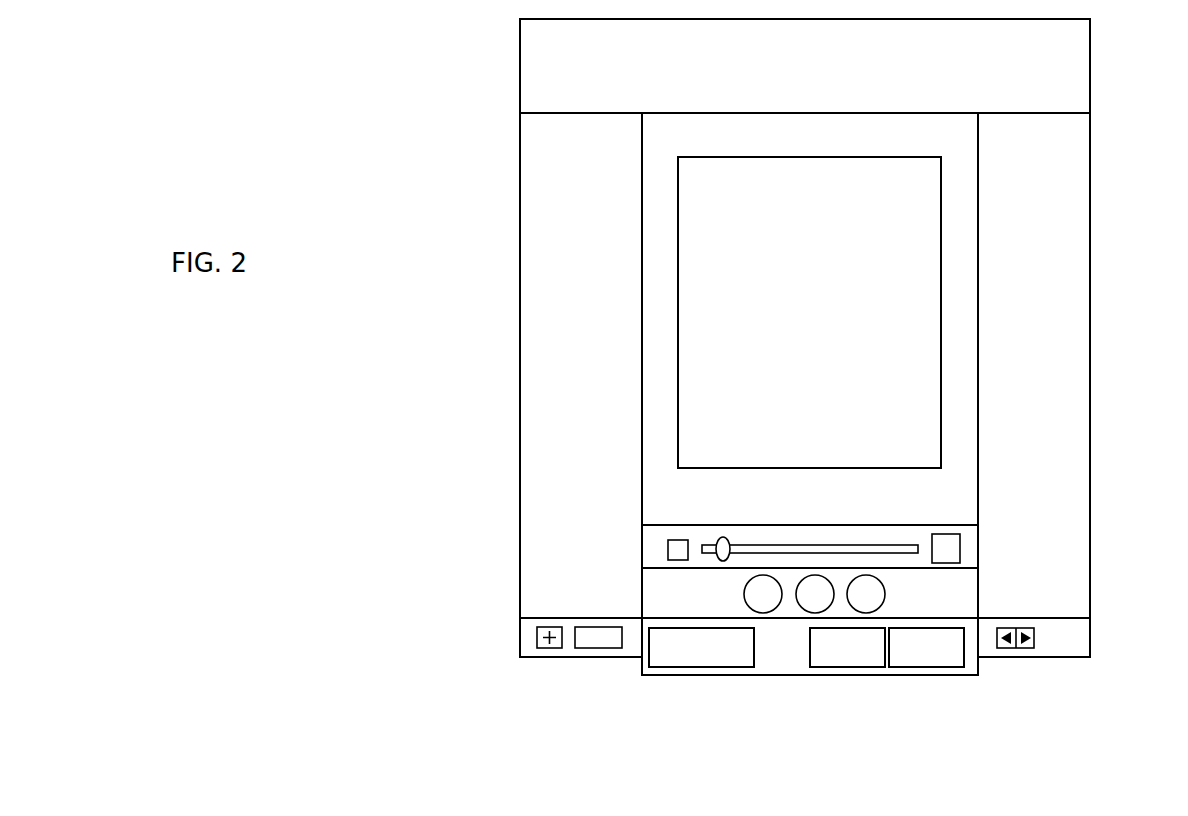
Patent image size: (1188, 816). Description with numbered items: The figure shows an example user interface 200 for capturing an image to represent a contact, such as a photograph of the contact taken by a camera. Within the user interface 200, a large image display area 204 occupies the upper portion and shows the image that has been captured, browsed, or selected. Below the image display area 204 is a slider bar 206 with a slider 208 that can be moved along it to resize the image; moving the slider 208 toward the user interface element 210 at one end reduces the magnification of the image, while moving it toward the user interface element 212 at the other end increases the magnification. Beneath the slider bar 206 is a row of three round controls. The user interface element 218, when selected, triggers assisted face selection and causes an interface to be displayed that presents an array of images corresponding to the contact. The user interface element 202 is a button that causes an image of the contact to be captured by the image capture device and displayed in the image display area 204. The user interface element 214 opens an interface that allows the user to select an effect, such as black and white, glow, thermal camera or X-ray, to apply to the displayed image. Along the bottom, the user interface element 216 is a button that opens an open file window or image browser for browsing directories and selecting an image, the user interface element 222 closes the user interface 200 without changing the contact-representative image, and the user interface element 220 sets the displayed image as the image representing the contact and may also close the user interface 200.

The user interface 200 is at (641, 277).
The image display area 204 is at (941, 282).
The slider bar 206 is at (852, 543).
The slider 208 is at (720, 537).
The user interface element 210 is at (663, 549).
The user interface element 212 is at (962, 548).
The user interface element 218 is at (742, 597).
The user interface element 202 is at (803, 611).
The user interface element 214 is at (887, 598).
The user interface element 216 is at (697, 667).
The user interface element 222 is at (847, 670).
The user interface element 220 is at (923, 670).